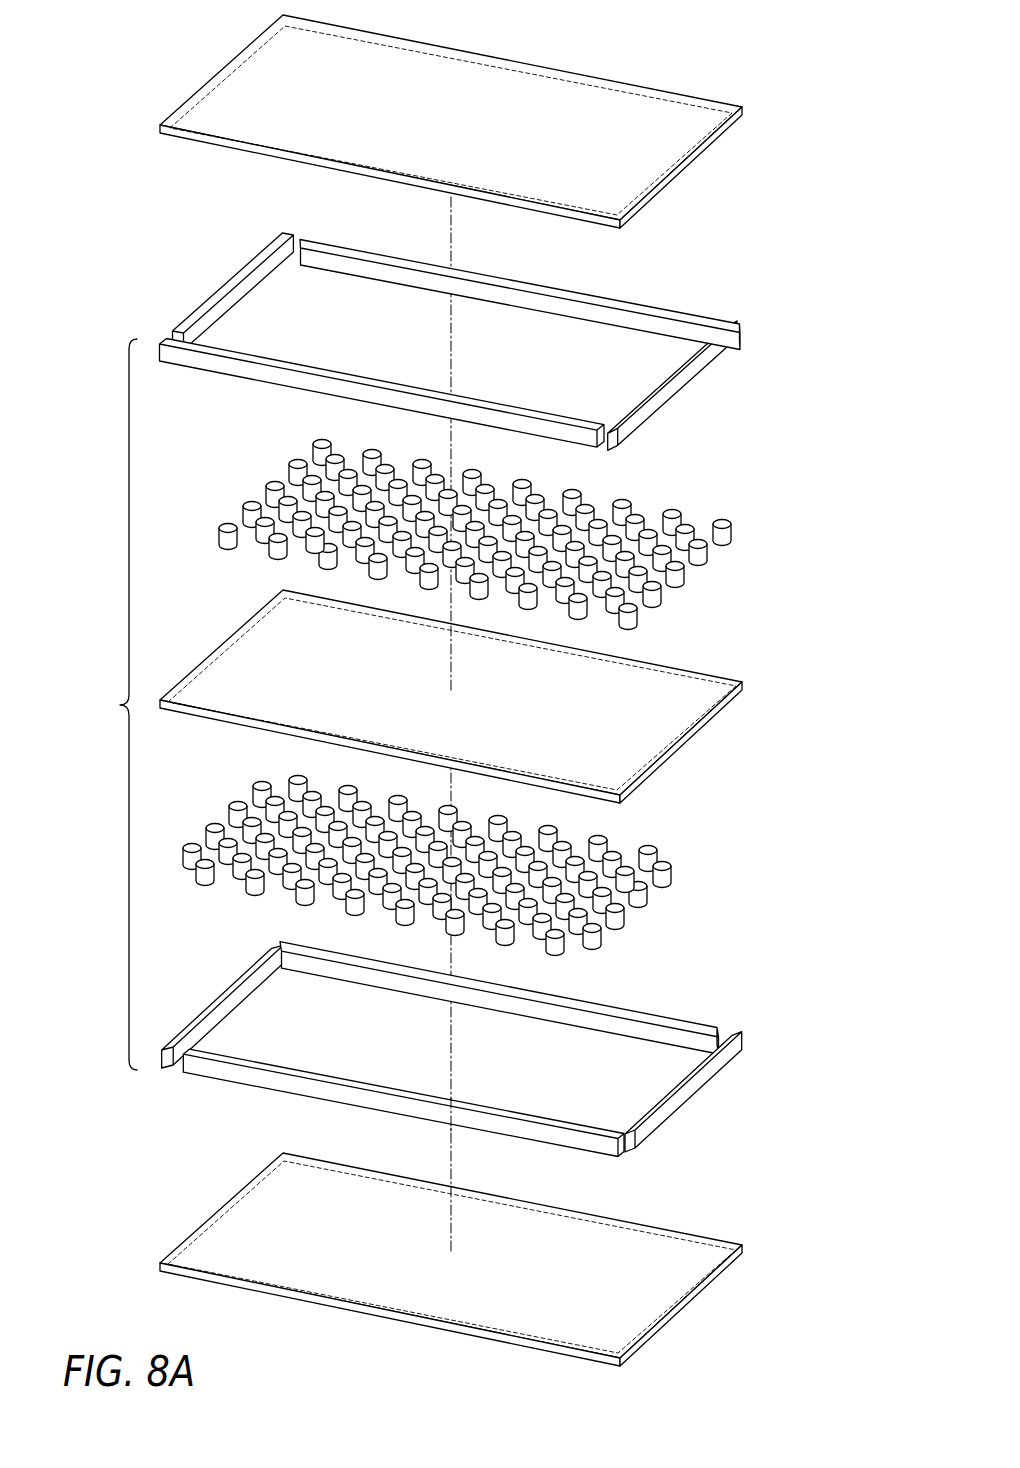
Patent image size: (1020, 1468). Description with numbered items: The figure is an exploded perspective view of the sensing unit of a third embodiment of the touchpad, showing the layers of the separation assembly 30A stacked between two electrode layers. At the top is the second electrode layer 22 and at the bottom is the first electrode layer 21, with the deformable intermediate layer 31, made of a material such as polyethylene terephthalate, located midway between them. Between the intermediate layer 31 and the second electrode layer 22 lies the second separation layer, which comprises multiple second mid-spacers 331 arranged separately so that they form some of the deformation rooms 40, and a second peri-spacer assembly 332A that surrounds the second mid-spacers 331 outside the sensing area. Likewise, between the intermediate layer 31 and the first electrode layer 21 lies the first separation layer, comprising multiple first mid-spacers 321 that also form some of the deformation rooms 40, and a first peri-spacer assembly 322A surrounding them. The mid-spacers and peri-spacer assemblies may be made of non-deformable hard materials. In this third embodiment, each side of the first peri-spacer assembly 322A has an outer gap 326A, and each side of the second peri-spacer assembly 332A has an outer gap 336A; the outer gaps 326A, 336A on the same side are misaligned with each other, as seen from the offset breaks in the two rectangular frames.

The second electrode layer 22 is at (193, 93).
The first electrode layer 21 is at (194, 1233).
The intermediate layer 31 is at (693, 668).
The separation assembly 30A is at (103, 704).
The second mid-spacers 331 is at (742, 536).
The first mid-spacers 321 is at (671, 868).
The deformation rooms 40 is at (300, 556).
The outer gap 336A is at (297, 238).
The second peri-spacer assembly 332A is at (677, 410).
The outer gap 326A is at (720, 1028).
The first peri-spacer assembly 322A is at (680, 1112).